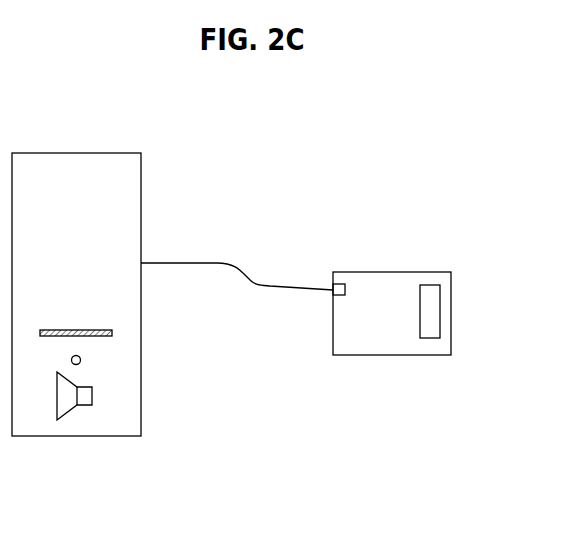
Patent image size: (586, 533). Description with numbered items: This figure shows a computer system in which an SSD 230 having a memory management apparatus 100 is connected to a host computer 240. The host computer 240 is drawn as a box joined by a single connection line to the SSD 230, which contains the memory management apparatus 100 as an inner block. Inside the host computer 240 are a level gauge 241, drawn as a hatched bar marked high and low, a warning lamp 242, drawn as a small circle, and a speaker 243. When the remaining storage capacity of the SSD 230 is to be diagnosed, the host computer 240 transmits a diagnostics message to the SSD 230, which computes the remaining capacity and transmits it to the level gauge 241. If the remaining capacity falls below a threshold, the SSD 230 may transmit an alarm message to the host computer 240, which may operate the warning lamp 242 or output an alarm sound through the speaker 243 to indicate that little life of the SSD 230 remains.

The host computer 240 is at (75, 153).
The level gauge 241 is at (112, 333).
The warning lamp 242 is at (80, 363).
The speaker 243 is at (80, 407).
The SSD 230 is at (392, 272).
The memory management apparatus 100 is at (432, 312).